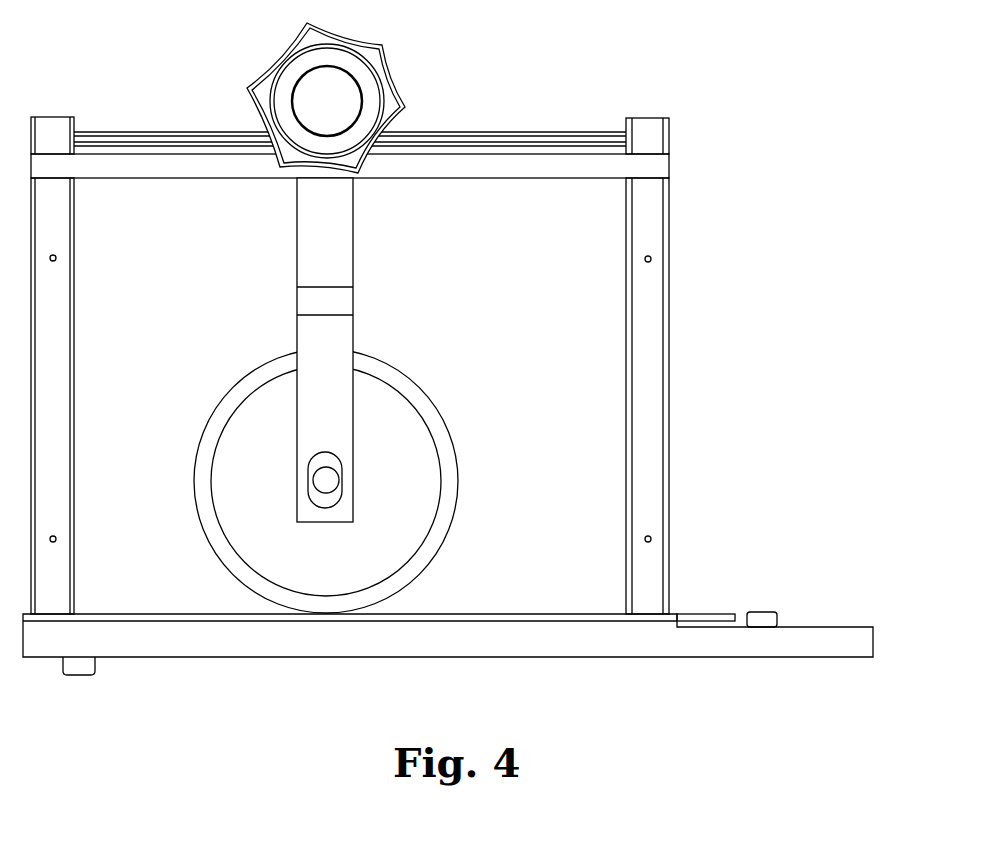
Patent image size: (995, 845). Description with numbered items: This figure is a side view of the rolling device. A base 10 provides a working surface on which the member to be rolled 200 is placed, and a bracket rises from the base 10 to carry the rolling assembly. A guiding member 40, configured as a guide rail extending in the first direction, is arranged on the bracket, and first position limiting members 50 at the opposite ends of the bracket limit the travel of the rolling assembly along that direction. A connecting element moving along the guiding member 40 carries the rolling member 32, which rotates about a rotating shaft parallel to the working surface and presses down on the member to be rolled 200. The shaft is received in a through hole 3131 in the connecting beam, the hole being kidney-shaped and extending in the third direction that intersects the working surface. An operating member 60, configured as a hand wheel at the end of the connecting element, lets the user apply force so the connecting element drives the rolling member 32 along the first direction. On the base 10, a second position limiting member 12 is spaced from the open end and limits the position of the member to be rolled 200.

The base 10 is at (468, 643).
The second position limiting member 12 is at (763, 622).
The member to be rolled 200 is at (697, 614).
The first position limiting member 50 is at (52, 131).
The guiding member 40 is at (500, 143).
The rolling member 32 is at (407, 430).
The through hole 3131 is at (316, 451).
The operating member 60 is at (366, 53).